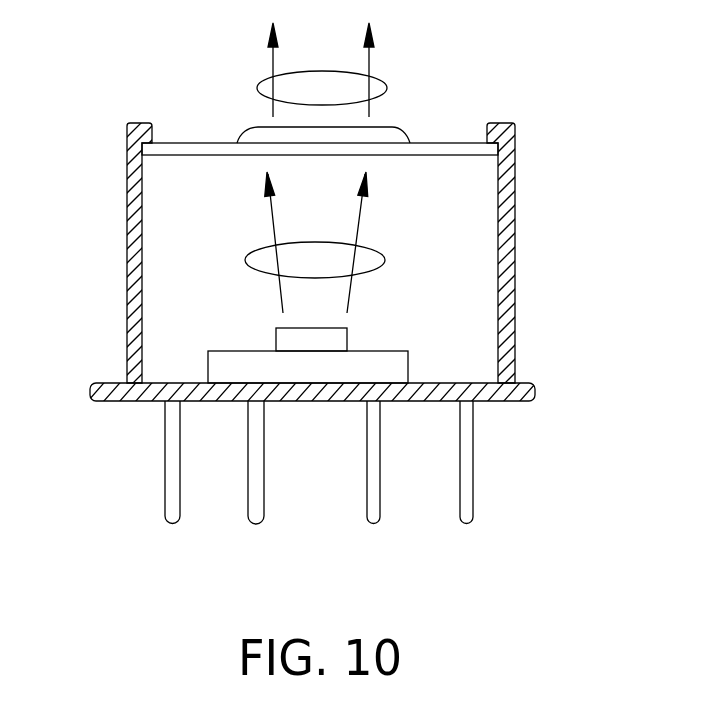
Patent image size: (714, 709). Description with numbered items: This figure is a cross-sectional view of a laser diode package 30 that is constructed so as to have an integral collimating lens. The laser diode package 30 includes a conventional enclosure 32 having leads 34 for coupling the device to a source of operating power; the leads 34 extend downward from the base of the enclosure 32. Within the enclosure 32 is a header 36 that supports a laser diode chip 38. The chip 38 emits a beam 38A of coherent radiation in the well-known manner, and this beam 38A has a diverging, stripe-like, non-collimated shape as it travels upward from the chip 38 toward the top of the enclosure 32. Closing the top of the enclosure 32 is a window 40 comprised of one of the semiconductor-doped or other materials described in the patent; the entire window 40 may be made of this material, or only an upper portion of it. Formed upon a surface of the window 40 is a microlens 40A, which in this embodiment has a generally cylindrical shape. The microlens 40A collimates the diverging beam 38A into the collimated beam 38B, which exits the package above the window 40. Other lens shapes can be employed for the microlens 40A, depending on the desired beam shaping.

The laser diode package 30 is at (526, 226).
The enclosure 32 is at (113, 382).
The leads 34 is at (248, 495).
The header 36 is at (408, 365).
The laser diode chip 38 is at (347, 335).
The beam 38A is at (254, 262).
The collimated beam 38B is at (262, 84).
The window 40 is at (443, 157).
The microlens 40A is at (393, 128).